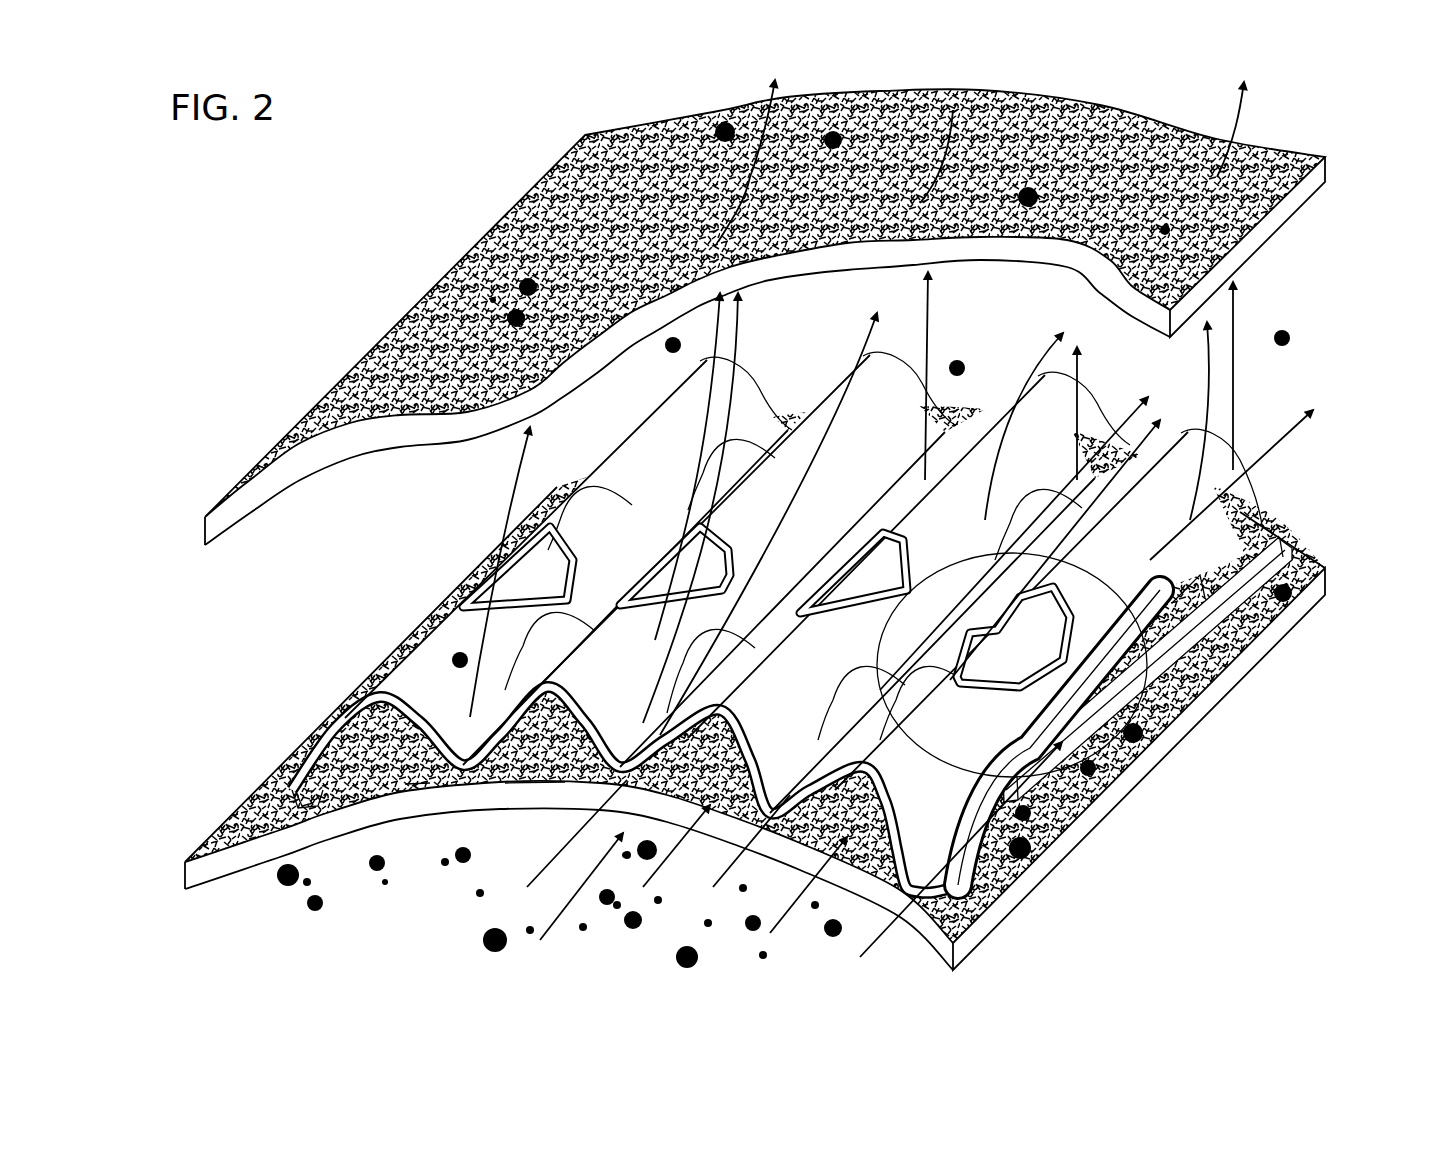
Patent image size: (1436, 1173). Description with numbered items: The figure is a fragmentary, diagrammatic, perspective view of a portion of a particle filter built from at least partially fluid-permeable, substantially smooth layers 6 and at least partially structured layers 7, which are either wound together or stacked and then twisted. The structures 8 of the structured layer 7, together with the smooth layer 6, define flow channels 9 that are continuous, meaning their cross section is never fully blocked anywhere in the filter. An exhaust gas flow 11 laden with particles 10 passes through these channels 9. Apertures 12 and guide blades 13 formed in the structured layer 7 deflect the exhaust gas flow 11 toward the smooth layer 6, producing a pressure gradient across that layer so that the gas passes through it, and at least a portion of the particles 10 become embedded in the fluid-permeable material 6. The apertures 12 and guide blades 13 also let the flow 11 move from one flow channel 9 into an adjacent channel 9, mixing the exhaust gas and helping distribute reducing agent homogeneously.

The fluid-permeable, substantially smooth layer 6 is at (1292, 180).
The structured layer 7 is at (1222, 478).
The structures 8 is at (318, 790).
The flow channels 9 is at (527, 783).
The particles 10 is at (706, 113).
The exhaust gas flow 11 is at (1243, 117).
The apertures 12 is at (1135, 602).
The guide blades 13 is at (1045, 772).